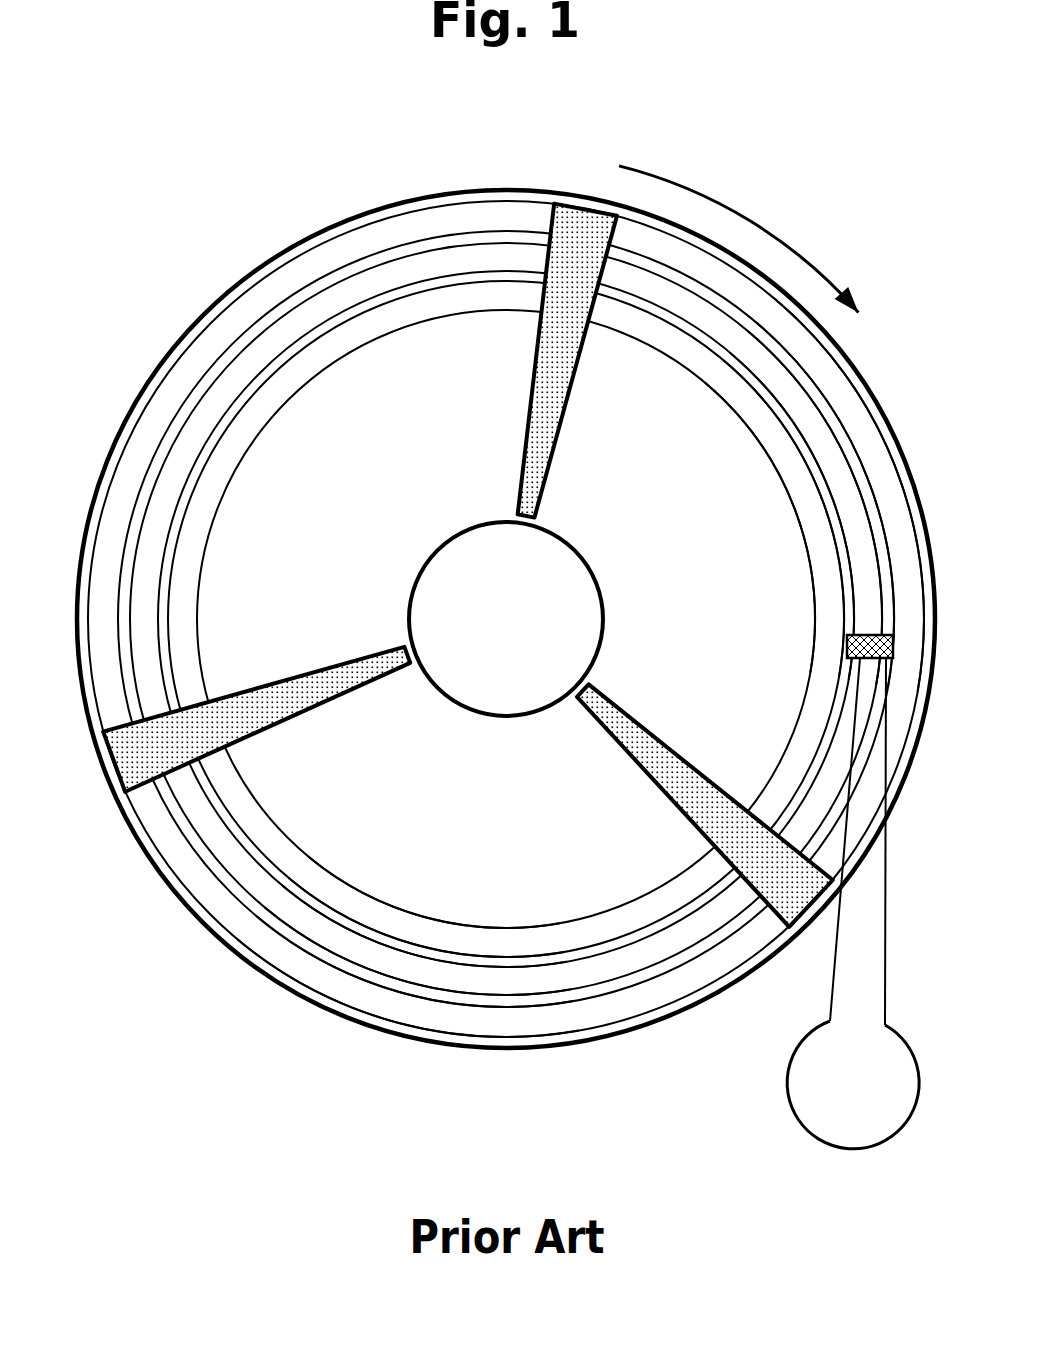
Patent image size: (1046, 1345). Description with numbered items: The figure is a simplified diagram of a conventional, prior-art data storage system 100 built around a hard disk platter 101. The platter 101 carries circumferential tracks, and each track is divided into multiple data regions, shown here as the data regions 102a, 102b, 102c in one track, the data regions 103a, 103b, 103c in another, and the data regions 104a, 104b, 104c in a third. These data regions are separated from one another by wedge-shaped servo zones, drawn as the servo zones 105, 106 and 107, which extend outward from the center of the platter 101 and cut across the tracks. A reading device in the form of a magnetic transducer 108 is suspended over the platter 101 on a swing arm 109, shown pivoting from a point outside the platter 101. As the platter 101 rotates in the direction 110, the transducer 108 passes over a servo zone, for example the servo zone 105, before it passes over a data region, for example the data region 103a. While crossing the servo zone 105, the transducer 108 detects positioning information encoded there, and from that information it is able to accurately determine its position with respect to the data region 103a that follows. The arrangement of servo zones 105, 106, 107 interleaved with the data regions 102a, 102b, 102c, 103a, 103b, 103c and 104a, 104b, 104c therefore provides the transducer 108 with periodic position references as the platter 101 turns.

The prior art rotating disc system 100 is at (128, 137).
The hard disk platter 101 is at (506, 619).
The data region 102a is at (506, 619).
The data region 102b is at (839, 495).
The data region 102c is at (407, 976).
The data region 103a is at (506, 619).
The data region 103b is at (806, 507).
The data region 103c is at (417, 940).
The data region 104a is at (506, 619).
The data region 104b is at (774, 519).
The data region 104c is at (427, 906).
The servo zone 105 is at (567, 361).
The servo zone 106 is at (256, 719).
The servo zone 107 is at (705, 805).
The magnetic transducer 108 is at (800, 612).
The swing arm 109 is at (853, 903).
The direction 110 is at (754, 227).